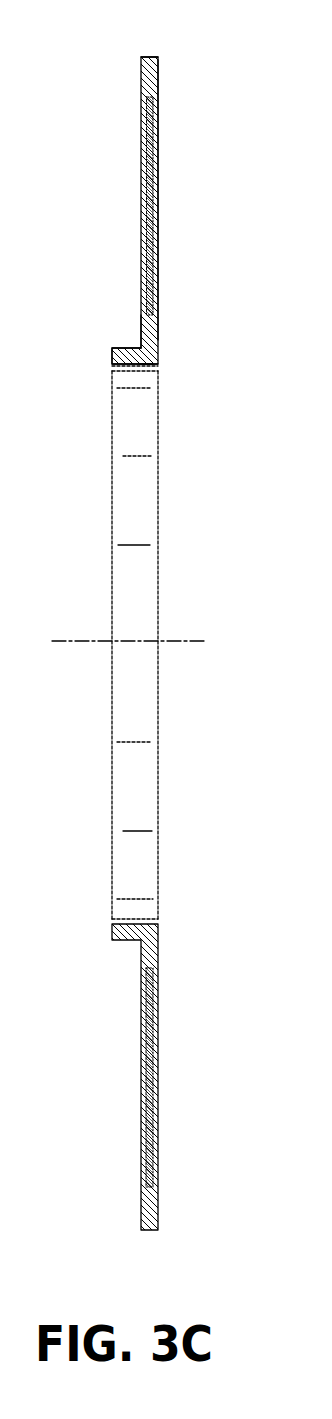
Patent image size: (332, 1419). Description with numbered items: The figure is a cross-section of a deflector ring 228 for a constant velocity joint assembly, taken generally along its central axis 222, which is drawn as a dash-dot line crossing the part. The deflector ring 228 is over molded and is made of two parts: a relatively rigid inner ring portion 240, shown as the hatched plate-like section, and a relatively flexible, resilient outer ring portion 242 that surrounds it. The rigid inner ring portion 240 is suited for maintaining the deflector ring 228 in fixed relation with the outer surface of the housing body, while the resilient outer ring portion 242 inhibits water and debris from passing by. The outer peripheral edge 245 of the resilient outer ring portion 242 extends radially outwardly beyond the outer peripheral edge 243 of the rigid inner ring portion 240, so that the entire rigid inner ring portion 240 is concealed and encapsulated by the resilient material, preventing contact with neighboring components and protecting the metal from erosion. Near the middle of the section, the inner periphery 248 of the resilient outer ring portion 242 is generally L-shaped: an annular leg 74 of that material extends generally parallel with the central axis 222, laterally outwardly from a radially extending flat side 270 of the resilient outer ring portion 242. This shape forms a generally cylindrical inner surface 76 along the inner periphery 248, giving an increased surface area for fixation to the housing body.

The deflector ring 228 is at (135, 617).
The rigid inner ring portion 240 is at (158, 207).
The resilient outer ring portion 242 is at (158, 84).
The outer peripheral edge of the rigid inner ring portion 243 is at (151, 97).
The outer peripheral edge of the resilient outer ring portion 245 is at (148, 57).
The radially extending flat side 270 is at (140, 329).
The annular leg 74 is at (118, 348).
The inner periphery 248 is at (123, 365).
The cylindrical inner surface 76 is at (146, 366).
The central axis 222 is at (168, 640).